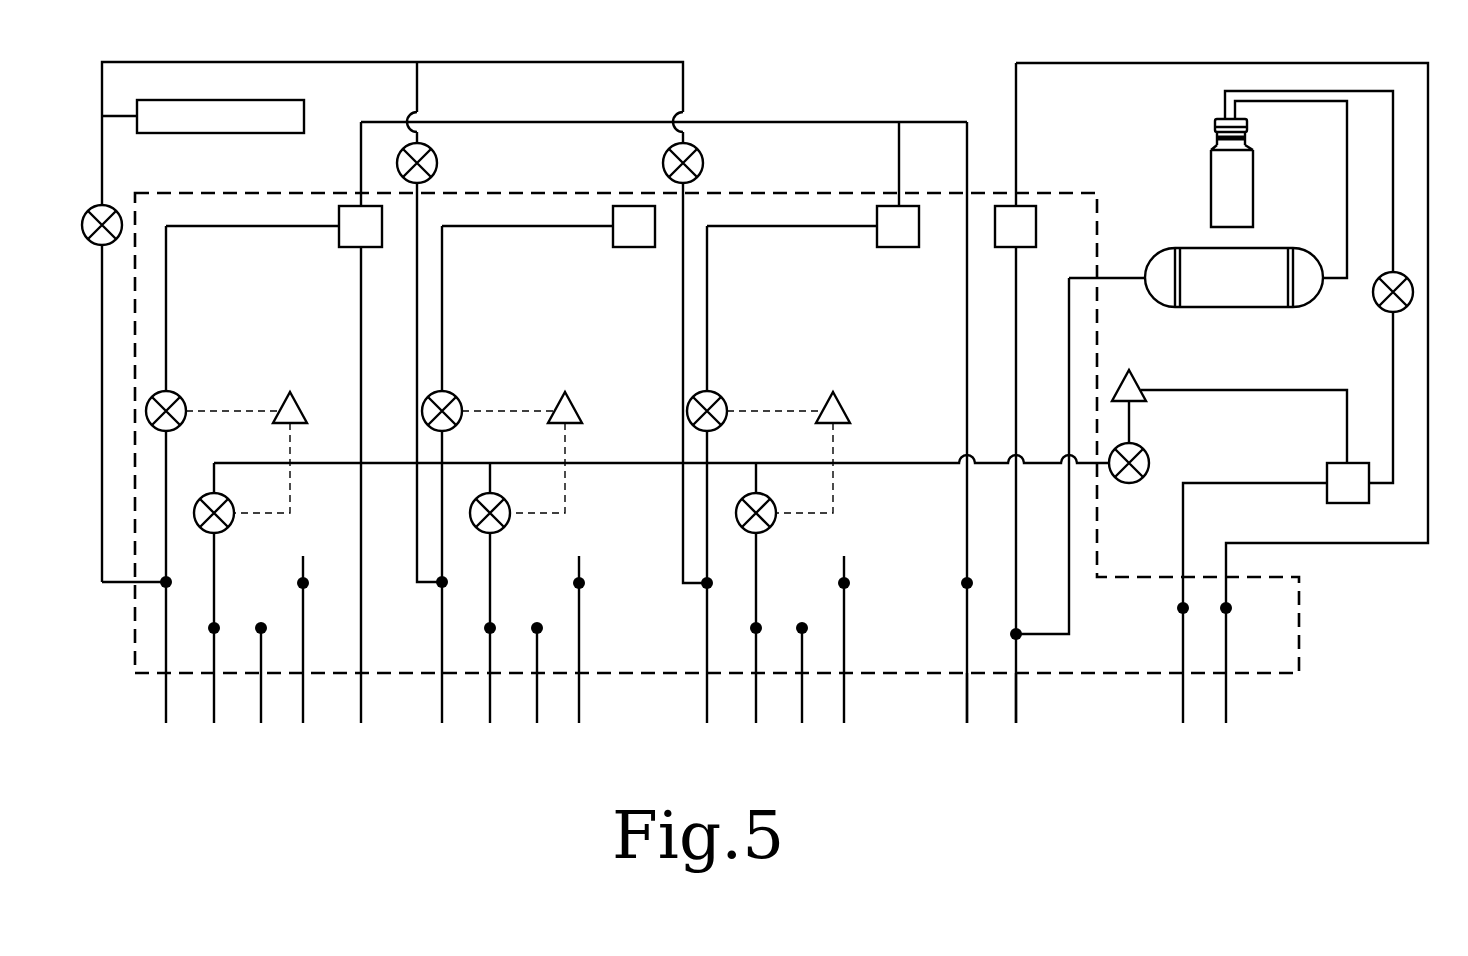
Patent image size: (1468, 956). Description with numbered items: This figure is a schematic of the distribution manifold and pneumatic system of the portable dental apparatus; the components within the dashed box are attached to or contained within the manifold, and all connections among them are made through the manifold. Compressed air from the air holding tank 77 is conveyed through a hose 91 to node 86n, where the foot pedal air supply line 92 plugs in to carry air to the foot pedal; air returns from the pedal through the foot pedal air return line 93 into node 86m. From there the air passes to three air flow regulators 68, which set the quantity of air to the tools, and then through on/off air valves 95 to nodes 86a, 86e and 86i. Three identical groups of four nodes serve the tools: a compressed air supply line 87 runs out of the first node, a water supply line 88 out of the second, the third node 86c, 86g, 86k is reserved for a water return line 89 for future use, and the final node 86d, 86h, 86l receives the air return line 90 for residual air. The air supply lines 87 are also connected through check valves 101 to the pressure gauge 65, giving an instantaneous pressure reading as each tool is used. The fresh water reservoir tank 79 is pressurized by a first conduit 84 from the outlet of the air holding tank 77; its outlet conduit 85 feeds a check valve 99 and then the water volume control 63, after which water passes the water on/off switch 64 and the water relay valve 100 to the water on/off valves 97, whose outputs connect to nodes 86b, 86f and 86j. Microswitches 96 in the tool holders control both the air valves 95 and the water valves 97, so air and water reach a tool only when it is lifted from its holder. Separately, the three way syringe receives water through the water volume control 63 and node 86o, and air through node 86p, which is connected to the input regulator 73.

The water volume control 63 is at (1327, 466).
The water on/off switch 64 is at (1132, 378).
The pressure gauge 65 is at (305, 115).
The air flow regulators 68 is at (347, 241).
The right hand control 73 is at (1028, 213).
The air holding tank 77 is at (1252, 300).
The fresh water reservoir tank 79 is at (1218, 175).
The first conduit 84 is at (1347, 150).
The outlet conduit 85 is at (1266, 92).
The connection node 86a is at (160, 585).
The connection node 86b is at (212, 628).
The connection node 86c is at (291, 634).
The connection node 86d is at (309, 583).
The connection node 86e is at (438, 585).
The connection node 86f is at (488, 628).
The connection node 86g is at (567, 634).
The connection node 86h is at (611, 574).
The connection node 86i is at (703, 587).
The connection node 86j is at (754, 628).
The connection node 86k is at (832, 634).
The connection node 86l is at (876, 574).
The connection node 86m is at (962, 587).
The connection node 86n is at (1013, 634).
The connection node 86o is at (1178, 608).
The connection node 86p is at (1232, 608).
The compressed air supply line 87 is at (436, 493).
The water supply line 88 is at (485, 612).
The water return line 89 is at (531, 694).
The air return line 90 is at (573, 658).
The hose 91 is at (1122, 276).
The foot pedal air supply line 92 is at (1018, 688).
The foot pedal air return line 93 is at (962, 688).
The on/off air valves 95 is at (186, 408).
The microswitches 96 is at (289, 393).
The water on/off valves 97 is at (228, 522).
The check valve 99 is at (1382, 305).
The water relay valve 100 is at (1145, 460).
The check valves 101 is at (108, 212).